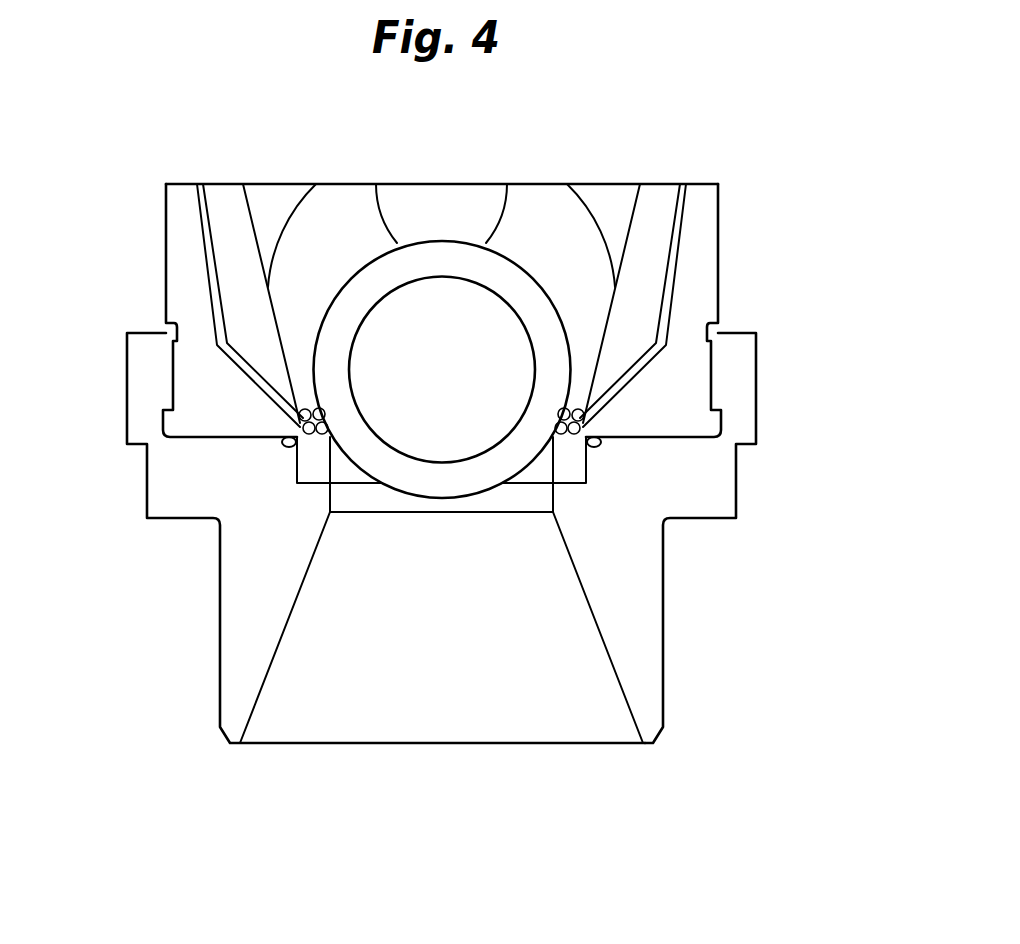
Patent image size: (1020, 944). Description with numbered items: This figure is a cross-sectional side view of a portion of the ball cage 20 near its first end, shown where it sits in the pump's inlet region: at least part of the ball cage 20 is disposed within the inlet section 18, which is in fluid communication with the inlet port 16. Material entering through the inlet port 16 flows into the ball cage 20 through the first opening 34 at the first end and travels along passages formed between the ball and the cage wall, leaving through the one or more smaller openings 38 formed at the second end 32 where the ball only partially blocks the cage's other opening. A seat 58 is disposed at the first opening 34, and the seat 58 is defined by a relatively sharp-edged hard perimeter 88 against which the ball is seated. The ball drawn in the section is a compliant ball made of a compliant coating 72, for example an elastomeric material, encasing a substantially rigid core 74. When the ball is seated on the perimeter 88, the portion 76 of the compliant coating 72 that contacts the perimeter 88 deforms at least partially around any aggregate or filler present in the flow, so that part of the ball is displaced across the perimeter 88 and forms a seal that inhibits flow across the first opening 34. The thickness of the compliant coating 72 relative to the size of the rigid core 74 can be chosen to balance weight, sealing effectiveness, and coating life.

The inlet port 16 is at (492, 765).
The inlet section 18 is at (447, 645).
The ball cage 20 is at (436, 451).
The second end 32 is at (488, 158).
The first opening 34 is at (404, 528).
The smaller openings 38 is at (337, 184).
The seat 58 is at (333, 437).
The compliant coating 72 is at (557, 340).
The substantially rigid core 74 is at (410, 422).
The portion of the compliant coating 76 is at (547, 410).
The perimeter 88 is at (305, 470).